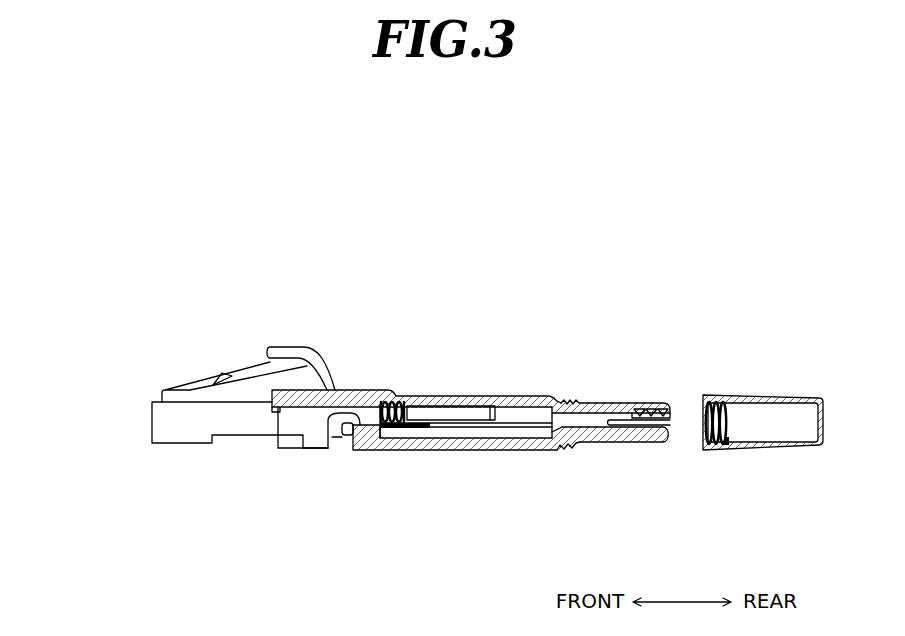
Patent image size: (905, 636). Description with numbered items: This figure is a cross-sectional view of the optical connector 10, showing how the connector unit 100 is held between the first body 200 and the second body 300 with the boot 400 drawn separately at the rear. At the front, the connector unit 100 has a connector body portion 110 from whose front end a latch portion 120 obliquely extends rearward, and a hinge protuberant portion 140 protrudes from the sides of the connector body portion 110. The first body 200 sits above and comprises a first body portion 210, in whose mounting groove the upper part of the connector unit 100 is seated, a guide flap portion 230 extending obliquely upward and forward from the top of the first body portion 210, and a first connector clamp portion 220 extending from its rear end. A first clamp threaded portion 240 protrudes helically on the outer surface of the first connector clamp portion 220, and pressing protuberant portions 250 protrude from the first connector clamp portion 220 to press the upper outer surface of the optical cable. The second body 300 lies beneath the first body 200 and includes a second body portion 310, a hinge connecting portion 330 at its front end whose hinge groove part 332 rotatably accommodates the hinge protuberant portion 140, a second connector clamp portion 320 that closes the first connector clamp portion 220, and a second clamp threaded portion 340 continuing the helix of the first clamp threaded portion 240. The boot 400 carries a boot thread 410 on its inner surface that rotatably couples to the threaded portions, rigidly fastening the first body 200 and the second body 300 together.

The optical connector 10 is at (500, 218).
The connector unit 100 is at (80, 352).
The connector body portion 110 is at (163, 423).
The latch portion 120 is at (243, 375).
The hinge protuberant portion 140 is at (328, 444).
The first body 200 is at (673, 295).
The first body portion 210 is at (447, 397).
The first connector clamp portion 220 is at (605, 397).
The guide flap portion 230 is at (333, 384).
The first clamp threaded portion 240 is at (568, 403).
The pressing protuberant portion 250 is at (652, 403).
The second body 300 is at (353, 513).
The second body portion 310 is at (507, 449).
The second connector clamp portion 320 is at (632, 443).
The hinge connecting portion 330 is at (390, 463).
The hinge groove part 332 is at (352, 443).
The second clamp threaded portion 340 is at (563, 446).
The boot 400 is at (757, 397).
The boot thread 410 is at (713, 451).